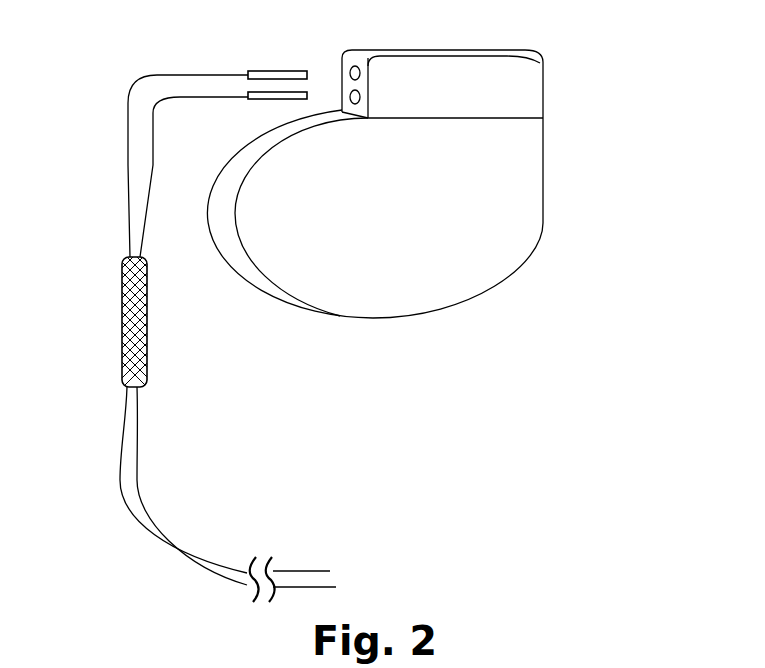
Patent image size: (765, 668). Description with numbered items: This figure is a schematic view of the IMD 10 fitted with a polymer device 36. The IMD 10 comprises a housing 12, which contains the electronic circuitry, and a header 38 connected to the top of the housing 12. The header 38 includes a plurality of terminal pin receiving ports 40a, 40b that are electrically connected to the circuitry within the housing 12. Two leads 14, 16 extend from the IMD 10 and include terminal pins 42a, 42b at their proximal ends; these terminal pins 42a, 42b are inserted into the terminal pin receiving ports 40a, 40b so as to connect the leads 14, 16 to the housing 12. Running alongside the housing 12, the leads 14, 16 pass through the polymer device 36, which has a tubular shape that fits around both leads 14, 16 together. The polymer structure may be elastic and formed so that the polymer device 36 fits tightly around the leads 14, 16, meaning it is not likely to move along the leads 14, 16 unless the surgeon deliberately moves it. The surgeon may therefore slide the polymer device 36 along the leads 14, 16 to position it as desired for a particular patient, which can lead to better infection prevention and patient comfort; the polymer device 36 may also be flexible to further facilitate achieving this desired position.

The IMD 10 is at (616, 52).
The housing 12 is at (535, 266).
The lead 14 is at (128, 113).
The lead 16 is at (153, 160).
The polymer device 36 is at (122, 310).
The header 38 is at (541, 62).
The terminal pin receiving port 40a is at (360, 64).
The terminal pin receiving port 40b is at (370, 98).
The terminal pin 42a is at (279, 70).
The terminal pin 42b is at (272, 100).